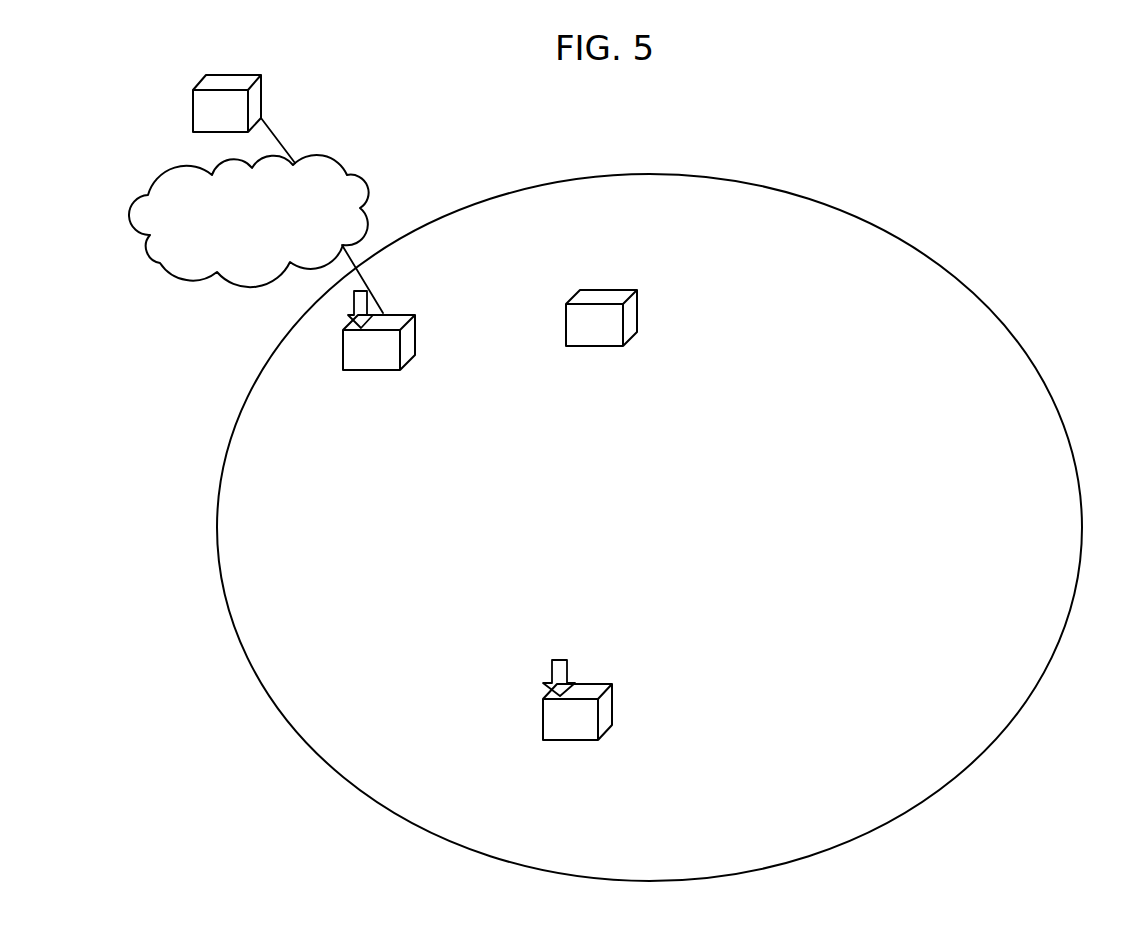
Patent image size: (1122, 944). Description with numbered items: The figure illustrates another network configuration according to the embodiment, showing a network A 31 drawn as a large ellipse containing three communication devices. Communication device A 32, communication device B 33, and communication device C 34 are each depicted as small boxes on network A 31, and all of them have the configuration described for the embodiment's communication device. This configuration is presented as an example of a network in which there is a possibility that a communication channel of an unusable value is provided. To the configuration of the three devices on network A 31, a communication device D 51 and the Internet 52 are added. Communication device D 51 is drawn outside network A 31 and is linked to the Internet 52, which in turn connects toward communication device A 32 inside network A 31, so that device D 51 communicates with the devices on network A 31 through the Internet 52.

The network A 31 is at (1025, 700).
The communication device A 32 is at (343, 350).
The communication device B 33 is at (637, 308).
The communication device C 34 is at (612, 700).
The communication device D 51 is at (192, 118).
The Internet 52 is at (365, 173).